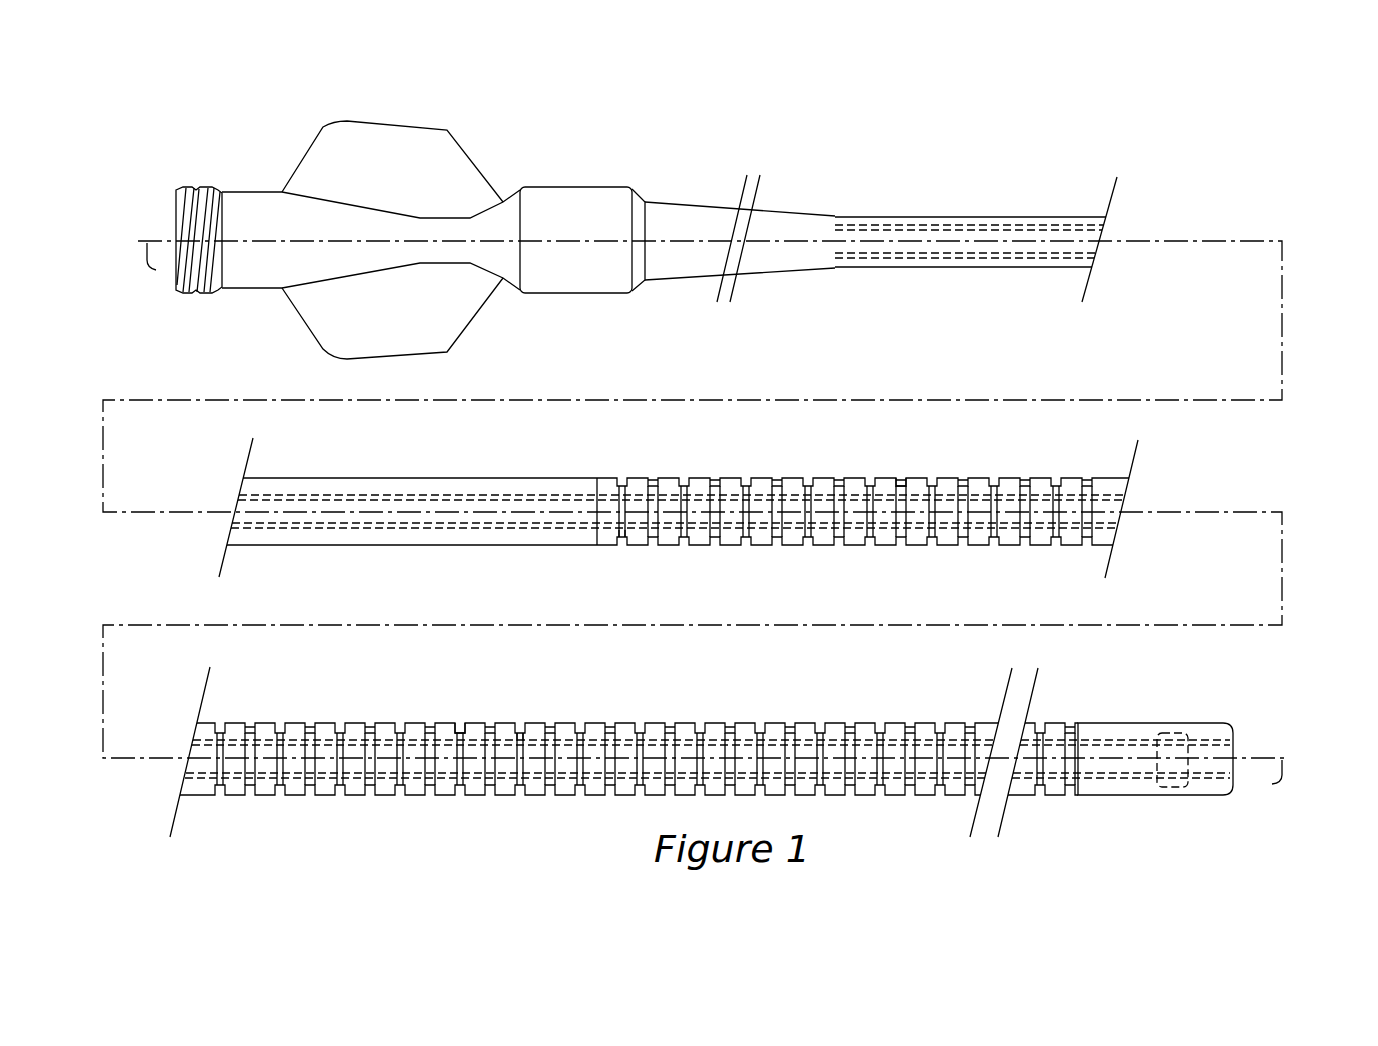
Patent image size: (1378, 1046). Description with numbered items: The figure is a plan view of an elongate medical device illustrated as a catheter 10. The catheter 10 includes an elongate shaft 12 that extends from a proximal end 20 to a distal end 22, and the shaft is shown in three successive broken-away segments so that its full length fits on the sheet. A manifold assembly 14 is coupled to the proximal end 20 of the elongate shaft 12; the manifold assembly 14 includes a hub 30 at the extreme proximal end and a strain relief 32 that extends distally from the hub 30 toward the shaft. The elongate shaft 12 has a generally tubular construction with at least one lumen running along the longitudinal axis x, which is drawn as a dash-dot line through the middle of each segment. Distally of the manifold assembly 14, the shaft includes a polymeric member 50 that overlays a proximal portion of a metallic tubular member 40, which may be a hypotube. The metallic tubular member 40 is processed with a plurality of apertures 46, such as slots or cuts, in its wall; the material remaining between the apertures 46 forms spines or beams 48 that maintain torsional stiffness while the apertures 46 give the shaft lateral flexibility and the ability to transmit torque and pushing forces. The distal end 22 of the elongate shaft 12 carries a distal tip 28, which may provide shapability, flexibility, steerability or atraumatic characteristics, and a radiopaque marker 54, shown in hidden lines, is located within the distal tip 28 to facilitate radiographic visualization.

The catheter 10 is at (1195, 145).
The elongate shaft 12 is at (1030, 201).
The manifold assembly 14 is at (274, 138).
The proximal end 20 is at (592, 170).
The distal end 22 is at (1273, 711).
The distal tip 28 is at (1206, 800).
The hub 30 is at (255, 192).
The strain relief 32 is at (697, 203).
The metallic tubular member 40 is at (761, 480).
The apertures 46 is at (899, 480).
The spines or beams 48 is at (621, 547).
The polymeric member 50 is at (918, 217).
The radiopaque marker 54 is at (1172, 733).